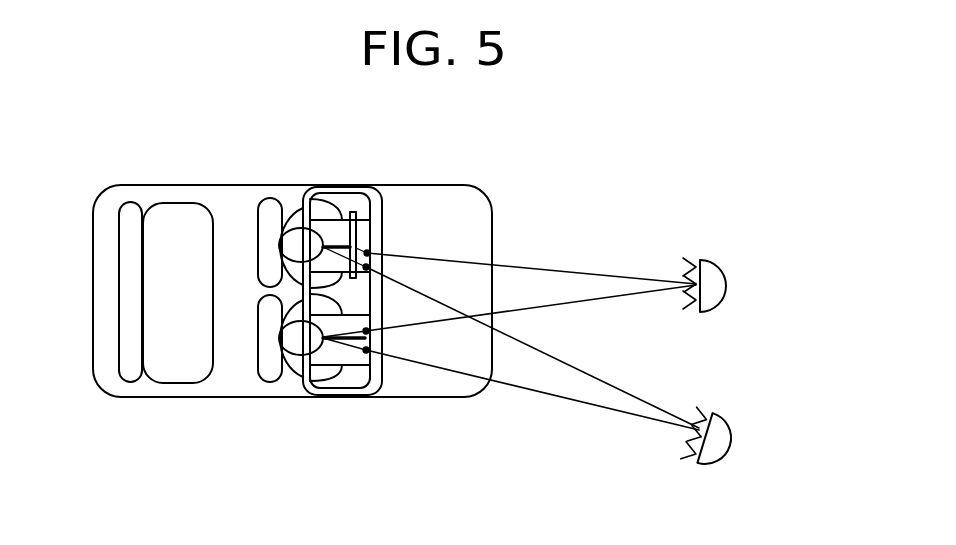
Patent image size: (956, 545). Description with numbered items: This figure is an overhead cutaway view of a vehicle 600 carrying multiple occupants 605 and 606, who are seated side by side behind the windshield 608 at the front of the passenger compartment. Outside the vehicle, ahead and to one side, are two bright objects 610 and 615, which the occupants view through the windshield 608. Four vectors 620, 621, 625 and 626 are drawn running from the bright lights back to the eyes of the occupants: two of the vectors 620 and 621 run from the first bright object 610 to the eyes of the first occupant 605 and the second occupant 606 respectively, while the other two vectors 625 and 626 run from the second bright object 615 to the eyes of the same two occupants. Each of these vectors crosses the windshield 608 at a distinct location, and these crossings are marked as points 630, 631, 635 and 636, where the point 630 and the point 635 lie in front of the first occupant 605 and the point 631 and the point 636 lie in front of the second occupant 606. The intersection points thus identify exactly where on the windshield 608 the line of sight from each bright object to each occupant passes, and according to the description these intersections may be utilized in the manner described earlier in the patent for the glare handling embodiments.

The vehicle 600 is at (158, 185).
The occupant 605 is at (296, 238).
The occupant 606 is at (297, 348).
The windshield 608 is at (372, 190).
The bright object 610 is at (723, 278).
The bright object 615 is at (732, 438).
The vector 620 is at (543, 265).
The vector 621 is at (592, 299).
The vector 625 is at (640, 400).
The vector 626 is at (560, 399).
The point 630 is at (367, 253).
The point 631 is at (366, 331).
The point 635 is at (366, 267).
The point 636 is at (366, 350).